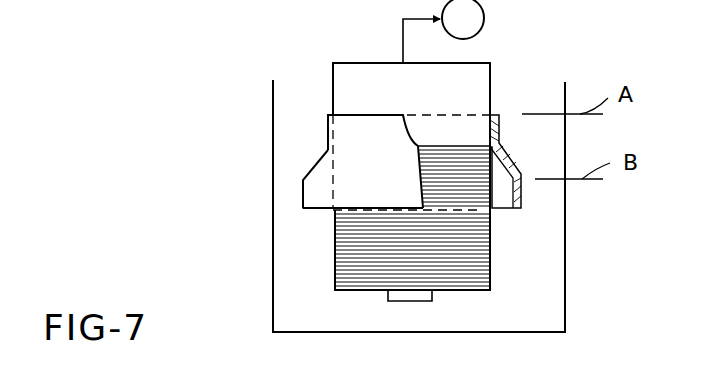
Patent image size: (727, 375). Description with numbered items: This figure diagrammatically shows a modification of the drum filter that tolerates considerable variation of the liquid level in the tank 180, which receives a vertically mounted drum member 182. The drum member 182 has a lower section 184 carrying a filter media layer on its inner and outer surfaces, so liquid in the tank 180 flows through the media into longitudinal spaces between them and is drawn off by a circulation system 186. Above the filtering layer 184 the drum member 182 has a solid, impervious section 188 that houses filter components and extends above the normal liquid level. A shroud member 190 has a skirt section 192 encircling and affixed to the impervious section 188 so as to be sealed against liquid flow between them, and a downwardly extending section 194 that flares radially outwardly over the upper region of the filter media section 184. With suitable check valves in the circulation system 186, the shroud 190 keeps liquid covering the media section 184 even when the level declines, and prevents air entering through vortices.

The tank 180 is at (265, 304).
The drum member 182 is at (313, 68).
The lower section 184 is at (490, 260).
The circulation system 186 is at (478, 31).
The solid section 188 is at (483, 87).
The shroud member 190 is at (300, 158).
The skirt section 192 is at (327, 121).
The downwardly extending section 194 is at (303, 181).